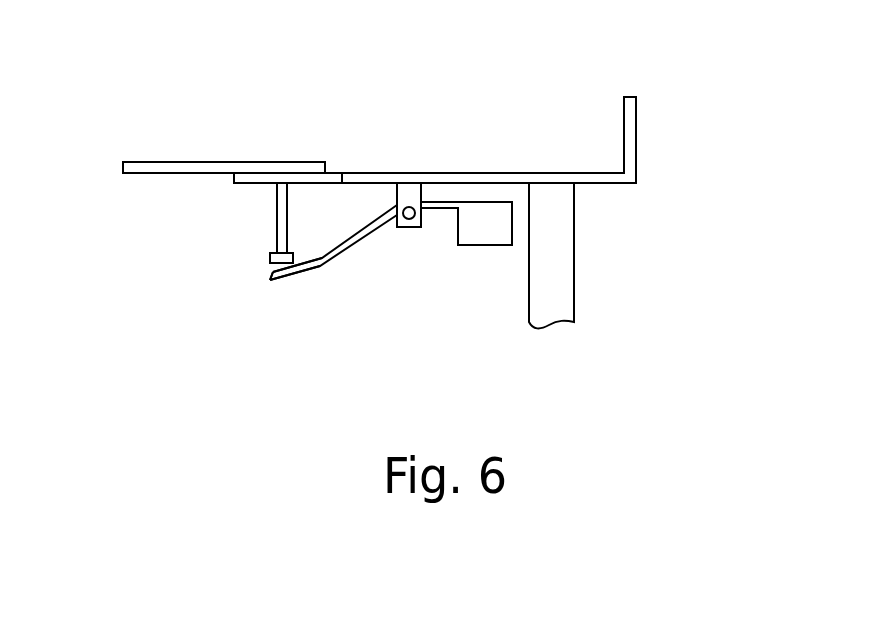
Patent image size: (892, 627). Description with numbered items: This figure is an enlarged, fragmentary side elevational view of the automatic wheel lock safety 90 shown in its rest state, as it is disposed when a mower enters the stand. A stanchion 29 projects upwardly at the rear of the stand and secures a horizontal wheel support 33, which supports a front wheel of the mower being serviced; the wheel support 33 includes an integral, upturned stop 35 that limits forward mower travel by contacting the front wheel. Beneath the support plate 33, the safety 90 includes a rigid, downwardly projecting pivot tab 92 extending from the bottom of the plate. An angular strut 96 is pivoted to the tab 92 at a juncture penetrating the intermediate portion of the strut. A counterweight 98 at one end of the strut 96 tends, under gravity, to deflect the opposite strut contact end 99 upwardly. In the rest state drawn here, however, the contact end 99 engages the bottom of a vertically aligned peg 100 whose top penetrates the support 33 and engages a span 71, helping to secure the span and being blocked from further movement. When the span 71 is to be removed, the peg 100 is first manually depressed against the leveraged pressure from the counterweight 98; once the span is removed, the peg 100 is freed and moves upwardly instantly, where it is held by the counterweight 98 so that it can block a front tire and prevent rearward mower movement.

The span 71 is at (173, 160).
The wheel support 33 is at (472, 170).
The upturned stop 35 is at (632, 132).
The peg 100 is at (282, 220).
The pivot tab 92 is at (410, 198).
The counterweight 98 is at (480, 228).
The stanchion 29 is at (560, 277).
The angular strut 96 is at (353, 243).
The strut contact end 99 is at (278, 280).
The safety 90 is at (452, 278).